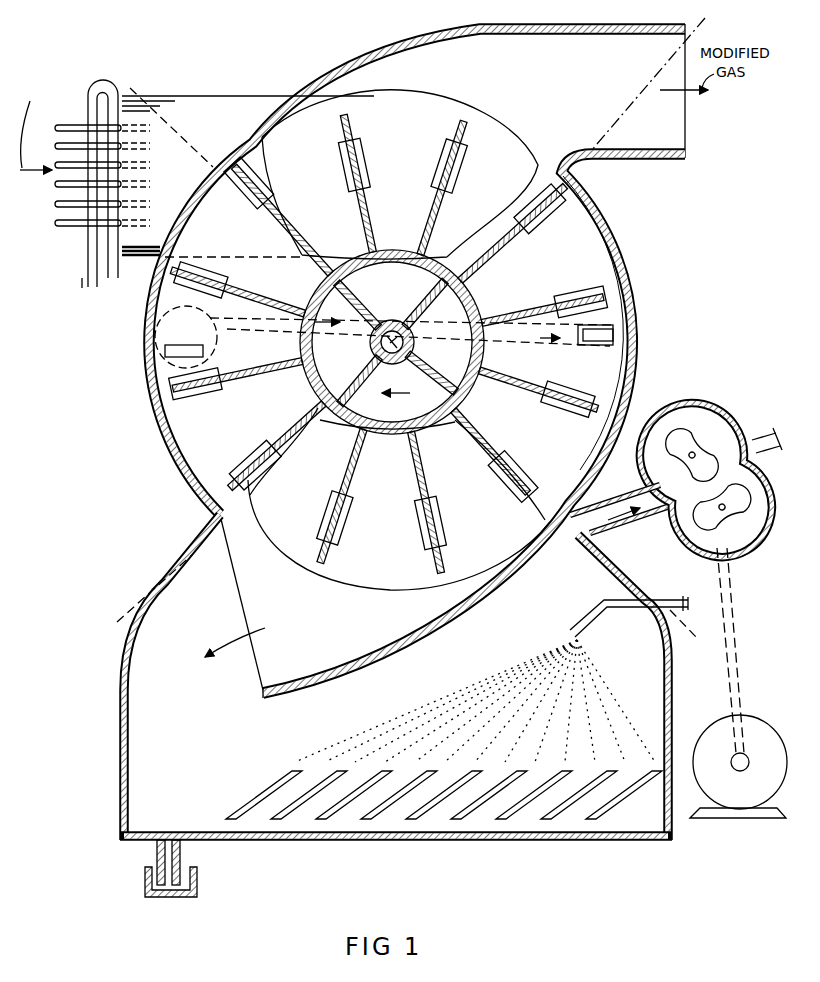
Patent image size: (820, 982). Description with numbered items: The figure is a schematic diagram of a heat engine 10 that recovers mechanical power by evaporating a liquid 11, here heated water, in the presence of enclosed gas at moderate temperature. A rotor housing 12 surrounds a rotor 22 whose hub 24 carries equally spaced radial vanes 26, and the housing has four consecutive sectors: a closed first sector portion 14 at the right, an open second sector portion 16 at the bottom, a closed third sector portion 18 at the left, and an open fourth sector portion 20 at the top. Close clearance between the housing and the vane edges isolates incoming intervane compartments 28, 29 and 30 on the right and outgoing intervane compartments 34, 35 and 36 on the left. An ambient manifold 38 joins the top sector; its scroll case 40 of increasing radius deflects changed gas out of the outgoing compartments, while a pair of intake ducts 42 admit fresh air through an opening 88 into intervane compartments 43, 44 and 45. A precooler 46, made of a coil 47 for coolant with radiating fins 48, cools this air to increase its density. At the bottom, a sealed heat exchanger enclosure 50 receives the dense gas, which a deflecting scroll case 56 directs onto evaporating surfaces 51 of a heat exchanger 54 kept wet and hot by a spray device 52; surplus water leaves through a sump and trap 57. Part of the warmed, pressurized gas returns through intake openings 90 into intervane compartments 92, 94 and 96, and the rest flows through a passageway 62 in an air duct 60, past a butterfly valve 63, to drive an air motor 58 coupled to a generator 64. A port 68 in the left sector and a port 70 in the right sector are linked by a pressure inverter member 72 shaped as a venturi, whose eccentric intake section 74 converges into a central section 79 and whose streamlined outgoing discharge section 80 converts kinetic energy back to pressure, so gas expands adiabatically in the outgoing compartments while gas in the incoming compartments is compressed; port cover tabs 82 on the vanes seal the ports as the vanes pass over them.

The heat engine 10 is at (441, 841).
The liquid 11 is at (526, 661).
The rotor housing 12 is at (619, 263).
The closed first sector portion 14 is at (622, 302).
The open second sector portion 16 is at (241, 503).
The closed third sector portion 18 is at (146, 350).
The open fourth sector portion 20 is at (541, 178).
The rotor 22 is at (430, 312).
The hub 24 is at (468, 391).
The vanes 26 is at (530, 312).
The incoming intervane compartment 28 is at (387, 352).
The incoming intervane compartment 29 is at (545, 365).
The incoming intervane compartment 30 is at (400, 334).
The outgoing intervane compartment 34 is at (381, 339).
The outgoing intervane compartment 35 is at (389, 342).
The outgoing intervane compartment 36 is at (394, 340).
The ambient manifold 38 is at (300, 94).
The scroll case 40 is at (636, 30).
The intake ducts 42 is at (149, 103).
The intervane compartment 43 is at (382, 330).
The intervane compartment 44 is at (389, 331).
The intervane compartment 45 is at (402, 331).
The precooler 46 is at (104, 78).
The coil 47 is at (87, 283).
The radiating fins 48 is at (56, 140).
The sealed heat exchanger enclosure 50 is at (121, 727).
The evaporating surfaces 51 is at (268, 793).
The spray device 52 is at (600, 608).
The heat exchanger 54 is at (279, 793).
The deflecting scroll case 56 is at (315, 686).
The sump and trap 57 is at (199, 879).
The air motor 58 is at (730, 413).
The air duct 60 is at (603, 534).
The passageway 62 is at (599, 513).
The butterfly valve 63 is at (634, 527).
The generator 64 is at (773, 722).
The port 68 is at (174, 350).
The port 70 is at (614, 334).
The pressure inverter member 72 is at (198, 308).
The eccentric intake section 74 is at (216, 345).
The central section 79 is at (412, 329).
The outgoing discharge section 80 is at (552, 348).
The port cover tabs 82 is at (581, 292).
The opening 88 is at (458, 101).
The intake openings 90 is at (366, 594).
The intervane compartment 92 is at (381, 352).
The intervane compartment 94 is at (394, 356).
The intervane compartment 96 is at (490, 459).